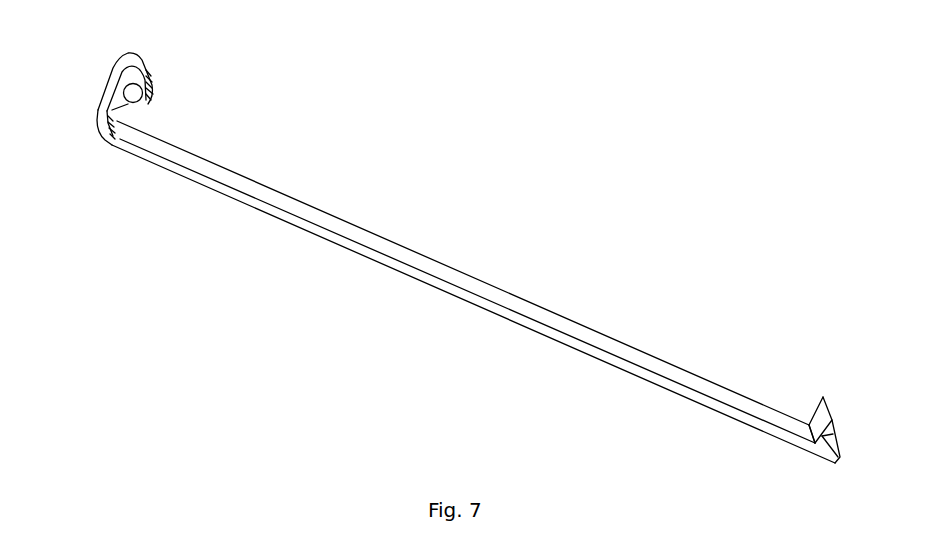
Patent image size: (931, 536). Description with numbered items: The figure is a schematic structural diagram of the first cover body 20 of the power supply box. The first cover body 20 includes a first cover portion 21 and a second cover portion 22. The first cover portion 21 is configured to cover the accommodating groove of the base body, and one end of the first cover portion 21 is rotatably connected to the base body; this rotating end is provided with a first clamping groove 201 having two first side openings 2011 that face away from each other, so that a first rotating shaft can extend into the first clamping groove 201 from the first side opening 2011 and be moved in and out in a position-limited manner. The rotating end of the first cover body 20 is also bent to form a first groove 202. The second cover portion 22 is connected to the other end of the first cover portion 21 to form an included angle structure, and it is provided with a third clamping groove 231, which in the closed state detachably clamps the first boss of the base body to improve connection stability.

The first cover body 20 is at (454, 42).
The first cover portion 21 is at (422, 257).
The second cover portion 22 is at (828, 405).
The third clamping groove 231 is at (808, 423).
The first clamping groove 201 is at (148, 72).
The first side opening 2011 is at (142, 103).
The first groove 202 is at (115, 113).